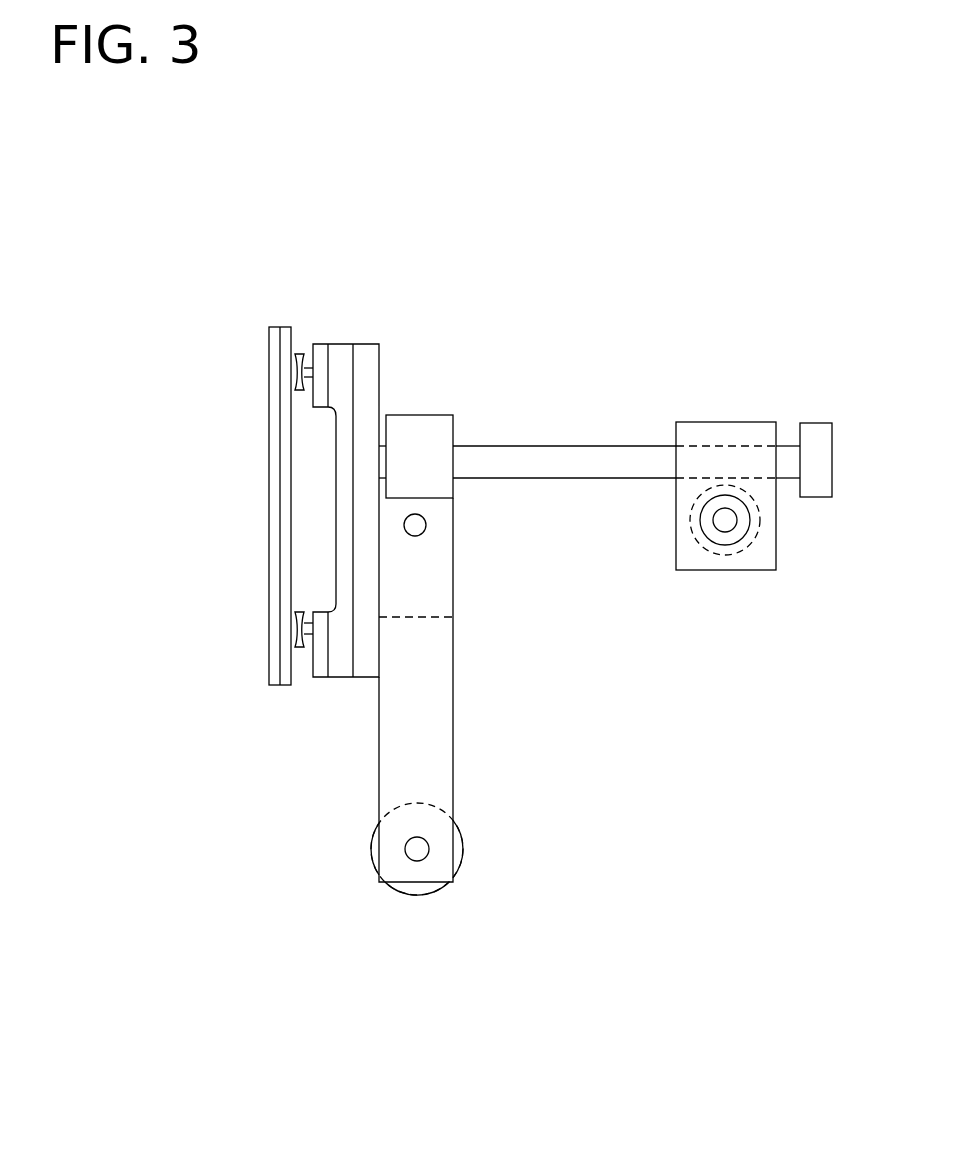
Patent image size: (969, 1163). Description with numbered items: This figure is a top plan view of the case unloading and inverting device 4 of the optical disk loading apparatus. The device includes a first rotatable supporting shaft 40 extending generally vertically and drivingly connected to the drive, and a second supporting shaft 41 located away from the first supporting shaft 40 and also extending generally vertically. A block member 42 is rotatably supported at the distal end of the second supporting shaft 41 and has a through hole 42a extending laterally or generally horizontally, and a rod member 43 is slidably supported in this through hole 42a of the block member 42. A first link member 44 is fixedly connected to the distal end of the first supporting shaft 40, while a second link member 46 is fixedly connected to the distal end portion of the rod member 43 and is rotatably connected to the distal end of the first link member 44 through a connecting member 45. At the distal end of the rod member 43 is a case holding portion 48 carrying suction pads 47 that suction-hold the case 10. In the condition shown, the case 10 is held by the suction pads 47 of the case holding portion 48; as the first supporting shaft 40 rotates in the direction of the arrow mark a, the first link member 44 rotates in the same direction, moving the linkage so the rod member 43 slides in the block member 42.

The case unloading and inverting device 4 is at (602, 282).
The case 10 is at (273, 552).
The first rotatable supporting shaft 40 is at (417, 890).
The second supporting shaft 41 is at (750, 547).
The block member 42 is at (750, 428).
The through hole 42a is at (720, 446).
The rod member 43 is at (583, 448).
The first link member 44 is at (443, 732).
The connecting member 45 is at (427, 525).
The second link member 46 is at (443, 420).
The suction pad 47 is at (300, 354).
The case holding portion 48 is at (340, 352).
The arrow mark a is at (470, 822).